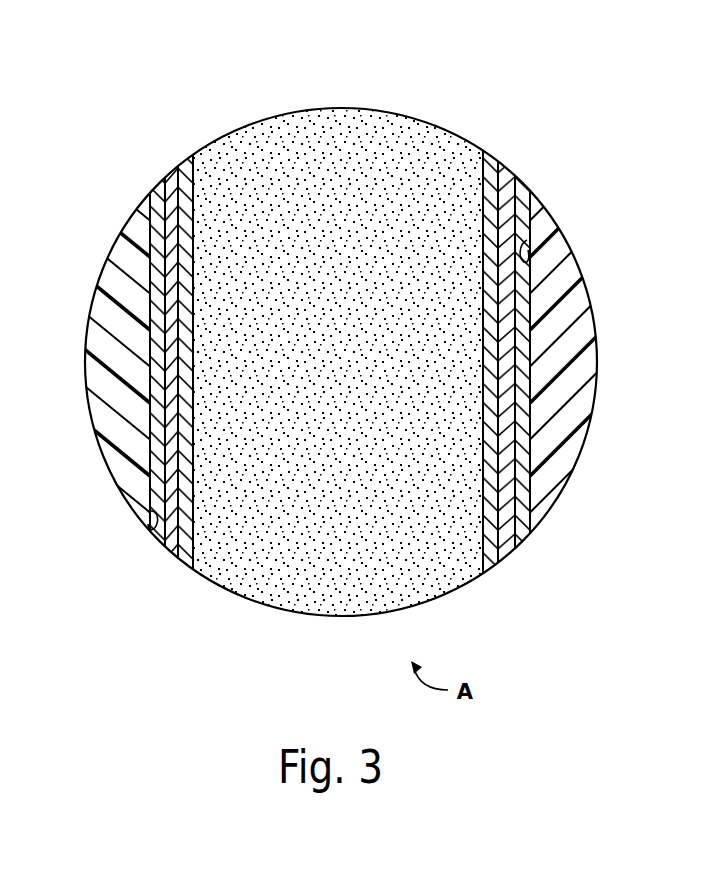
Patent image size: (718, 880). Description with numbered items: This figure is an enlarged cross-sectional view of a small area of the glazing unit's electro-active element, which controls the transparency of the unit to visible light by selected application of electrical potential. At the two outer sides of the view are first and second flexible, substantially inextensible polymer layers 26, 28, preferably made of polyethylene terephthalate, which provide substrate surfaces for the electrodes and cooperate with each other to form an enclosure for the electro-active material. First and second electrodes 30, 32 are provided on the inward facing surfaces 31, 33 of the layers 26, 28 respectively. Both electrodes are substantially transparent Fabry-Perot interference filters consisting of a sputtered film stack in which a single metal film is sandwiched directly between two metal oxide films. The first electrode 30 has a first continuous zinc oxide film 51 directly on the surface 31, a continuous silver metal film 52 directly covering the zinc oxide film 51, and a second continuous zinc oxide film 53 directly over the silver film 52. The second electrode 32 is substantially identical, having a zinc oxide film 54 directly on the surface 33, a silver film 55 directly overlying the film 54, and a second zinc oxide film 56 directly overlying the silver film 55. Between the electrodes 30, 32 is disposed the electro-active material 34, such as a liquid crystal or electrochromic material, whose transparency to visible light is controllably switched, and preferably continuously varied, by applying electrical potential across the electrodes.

The first inextensible polymer layer 26 is at (112, 270).
The second inextensible polymer layer 28 is at (562, 318).
The first electrode 30 is at (139, 364).
The inward facing surface 31 is at (126, 535).
The second electrode 32 is at (536, 371).
The inward facing surface 33 is at (530, 238).
The electro-active material 34 is at (356, 128).
The first zinc oxide film 51 is at (157, 195).
The silver metal film 52 is at (172, 175).
The second zinc oxide film 53 is at (185, 170).
The zinc oxide film 54 is at (523, 187).
The silver film 55 is at (505, 177).
The second zinc oxide film 56 is at (486, 155).